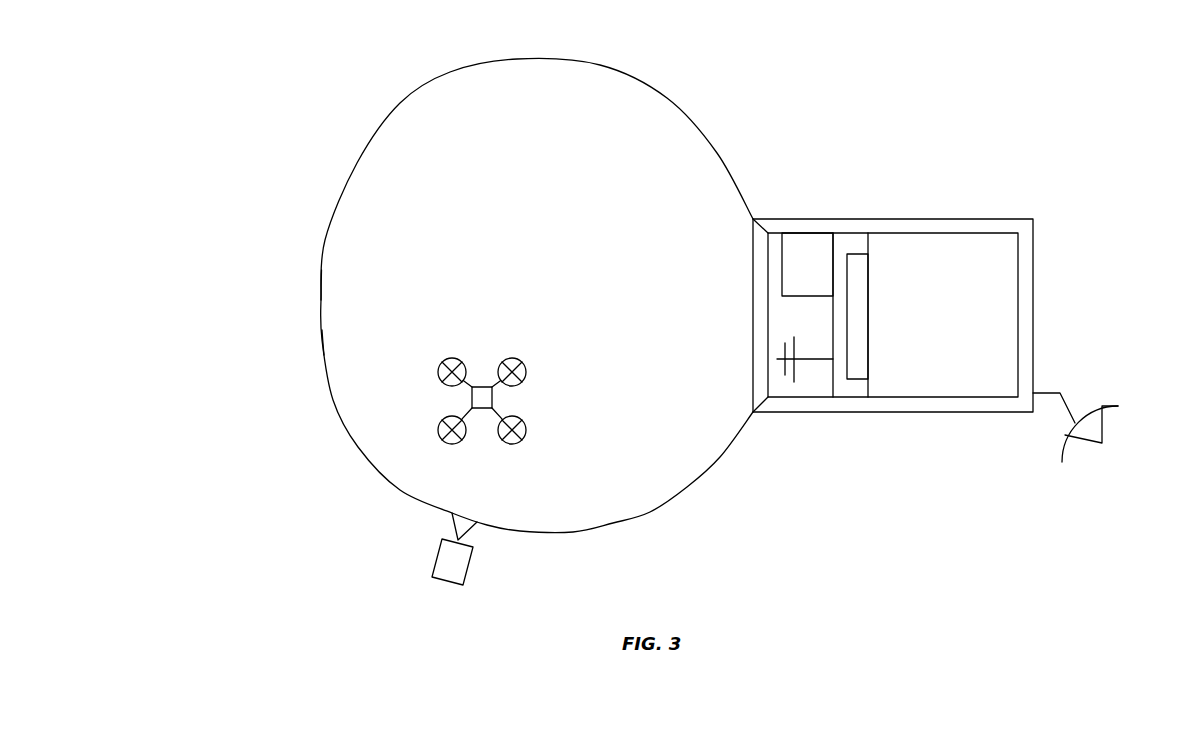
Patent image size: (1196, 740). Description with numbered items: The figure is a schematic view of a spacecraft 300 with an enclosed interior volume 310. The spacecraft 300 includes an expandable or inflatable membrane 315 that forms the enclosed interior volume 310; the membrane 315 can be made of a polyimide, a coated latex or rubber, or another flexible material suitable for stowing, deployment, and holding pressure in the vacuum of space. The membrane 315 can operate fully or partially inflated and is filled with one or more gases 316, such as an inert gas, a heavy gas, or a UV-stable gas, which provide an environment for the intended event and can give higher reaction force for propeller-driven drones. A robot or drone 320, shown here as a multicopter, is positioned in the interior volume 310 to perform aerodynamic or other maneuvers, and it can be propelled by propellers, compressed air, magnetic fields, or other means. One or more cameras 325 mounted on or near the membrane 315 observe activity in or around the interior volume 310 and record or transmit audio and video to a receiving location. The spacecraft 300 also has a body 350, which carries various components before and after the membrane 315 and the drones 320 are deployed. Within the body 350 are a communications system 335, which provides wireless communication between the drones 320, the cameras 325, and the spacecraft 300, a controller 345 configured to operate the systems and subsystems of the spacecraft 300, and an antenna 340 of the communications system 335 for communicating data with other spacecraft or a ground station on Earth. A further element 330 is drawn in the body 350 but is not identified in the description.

The spacecraft 300 is at (290, 114).
The enclosed interior volume 310 is at (557, 286).
The membrane 315 is at (323, 280).
The gases 316 is at (367, 345).
The drone 320 is at (440, 433).
The camera 325 is at (437, 562).
The controller 330 is at (805, 260).
The communications system 335 is at (807, 360).
The antenna 340 is at (1102, 435).
The controller 345 is at (855, 363).
The body 350 is at (1033, 222).